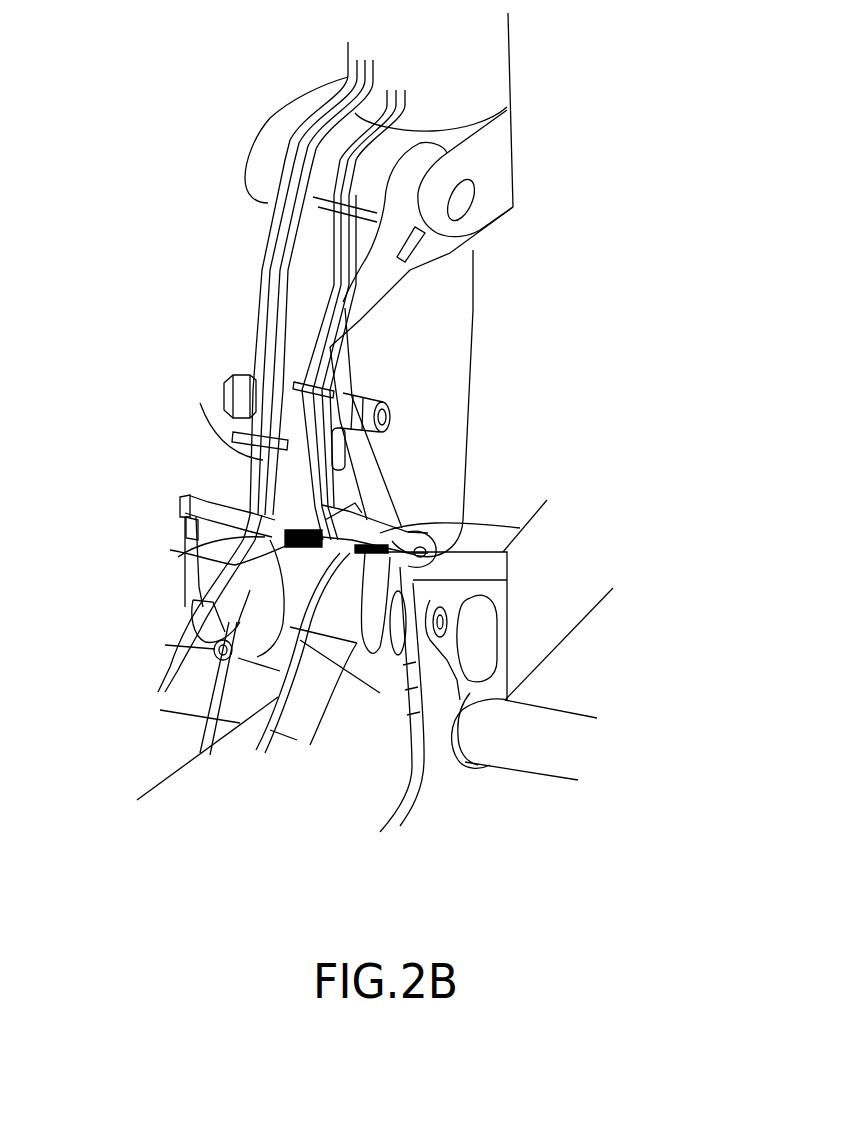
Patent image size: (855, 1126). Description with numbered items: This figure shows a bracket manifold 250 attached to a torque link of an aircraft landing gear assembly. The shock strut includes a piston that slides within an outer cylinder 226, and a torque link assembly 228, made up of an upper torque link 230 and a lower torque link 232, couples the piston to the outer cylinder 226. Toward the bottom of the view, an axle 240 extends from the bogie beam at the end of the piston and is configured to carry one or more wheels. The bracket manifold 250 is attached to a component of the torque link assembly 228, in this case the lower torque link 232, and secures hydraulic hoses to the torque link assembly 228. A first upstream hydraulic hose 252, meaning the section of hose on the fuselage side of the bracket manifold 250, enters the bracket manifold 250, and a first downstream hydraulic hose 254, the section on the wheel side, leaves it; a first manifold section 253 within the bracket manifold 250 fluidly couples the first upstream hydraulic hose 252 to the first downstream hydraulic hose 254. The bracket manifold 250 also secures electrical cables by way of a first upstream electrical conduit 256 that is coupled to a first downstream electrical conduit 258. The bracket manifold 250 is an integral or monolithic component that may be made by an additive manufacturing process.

The outer cylinder 226 is at (447, 480).
The torque link assembly 228 is at (213, 358).
The upper torque link 230 is at (265, 272).
The lower torque link 232 is at (297, 563).
The axle 240 is at (529, 757).
The bracket manifold 250 is at (145, 493).
The first upstream hydraulic hose 252 is at (243, 460).
The first manifold section 253 is at (207, 493).
The first downstream hydraulic hose 254 is at (187, 555).
The first upstream electrical conduit 256 is at (520, 528).
The first downstream electrical conduit 258 is at (507, 580).